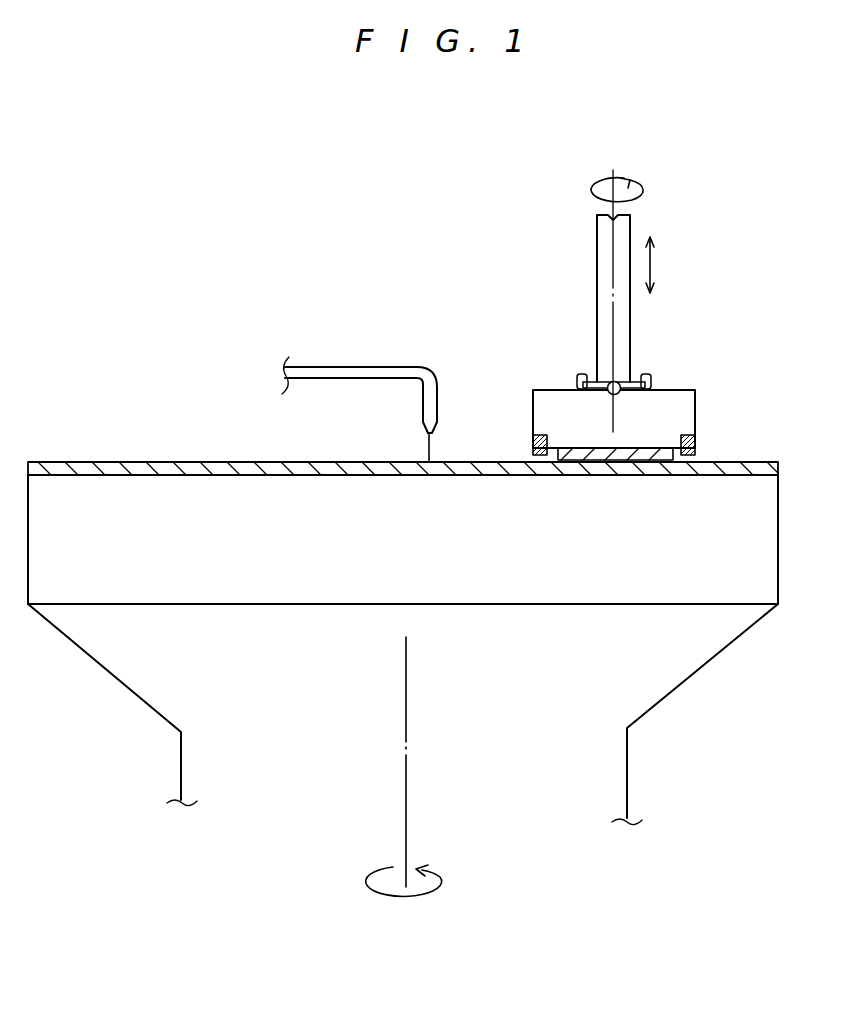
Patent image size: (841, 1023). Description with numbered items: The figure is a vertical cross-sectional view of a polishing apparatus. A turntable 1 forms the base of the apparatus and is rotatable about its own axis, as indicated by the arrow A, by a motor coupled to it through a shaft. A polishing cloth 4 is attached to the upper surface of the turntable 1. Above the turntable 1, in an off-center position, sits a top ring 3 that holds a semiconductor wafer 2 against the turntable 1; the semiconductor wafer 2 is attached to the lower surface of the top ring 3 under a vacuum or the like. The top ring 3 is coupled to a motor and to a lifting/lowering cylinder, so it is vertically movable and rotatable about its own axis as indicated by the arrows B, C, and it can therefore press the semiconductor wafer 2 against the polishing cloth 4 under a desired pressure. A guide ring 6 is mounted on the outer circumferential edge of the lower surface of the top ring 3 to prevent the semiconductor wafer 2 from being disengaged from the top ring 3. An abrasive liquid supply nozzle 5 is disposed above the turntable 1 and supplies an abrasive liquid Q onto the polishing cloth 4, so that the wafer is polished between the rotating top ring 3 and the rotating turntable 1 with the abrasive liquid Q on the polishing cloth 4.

The turntable 1 is at (738, 530).
The semiconductor wafer 2 is at (633, 456).
The top ring 3 is at (663, 400).
The polishing cloth 4 is at (225, 462).
The abrasive liquid supply nozzle 5 is at (387, 367).
The guide ring 6 is at (694, 443).
The abrasive liquid Q is at (434, 457).
The arrow indicating turntable rotation A is at (405, 898).
The arrow indicating vertical movement of top ring B is at (655, 262).
The arrow indicating top ring rotation C is at (585, 190).